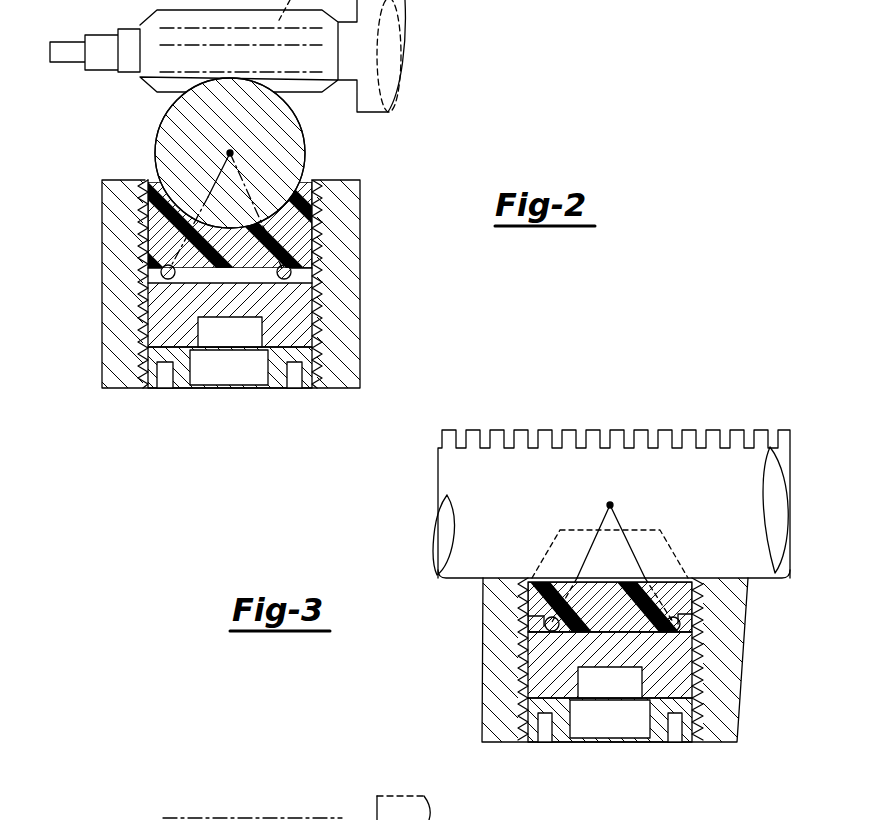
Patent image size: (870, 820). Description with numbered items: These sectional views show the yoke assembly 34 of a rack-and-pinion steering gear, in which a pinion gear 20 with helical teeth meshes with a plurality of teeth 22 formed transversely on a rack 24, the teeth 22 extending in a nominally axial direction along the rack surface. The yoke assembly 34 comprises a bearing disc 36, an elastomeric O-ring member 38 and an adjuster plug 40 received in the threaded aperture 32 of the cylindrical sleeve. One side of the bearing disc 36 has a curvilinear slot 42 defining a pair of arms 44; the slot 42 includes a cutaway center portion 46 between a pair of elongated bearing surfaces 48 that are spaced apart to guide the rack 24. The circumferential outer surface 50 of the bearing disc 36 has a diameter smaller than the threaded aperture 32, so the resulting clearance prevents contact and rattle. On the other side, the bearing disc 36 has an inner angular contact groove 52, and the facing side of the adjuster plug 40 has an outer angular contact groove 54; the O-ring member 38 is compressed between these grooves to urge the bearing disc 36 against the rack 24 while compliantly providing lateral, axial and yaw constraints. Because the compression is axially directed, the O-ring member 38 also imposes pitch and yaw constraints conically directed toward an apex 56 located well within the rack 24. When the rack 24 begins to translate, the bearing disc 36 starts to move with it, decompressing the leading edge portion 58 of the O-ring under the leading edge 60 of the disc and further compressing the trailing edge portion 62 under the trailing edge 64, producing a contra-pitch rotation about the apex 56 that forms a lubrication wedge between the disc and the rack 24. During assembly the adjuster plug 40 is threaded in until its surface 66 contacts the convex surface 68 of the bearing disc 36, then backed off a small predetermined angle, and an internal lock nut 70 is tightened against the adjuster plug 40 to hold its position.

In FIG. 3, the pinion gear 20 is at (275, 818).
In FIG. 2, the teeth 22 is at (227, 87).
In FIG. 3, the teeth 22 is at (518, 438).
In FIG. 2, the rack 24 is at (307, 157).
In FIG. 3, the rack 24 is at (440, 450).
In FIG. 2, the threaded aperture 32 is at (145, 207).
In FIG. 3, the threaded aperture 32 is at (528, 579).
In FIG. 2, the yoke assembly 34 is at (97, 255).
In FIG. 3, the yoke assembly 34 is at (760, 605).
In FIG. 2, the bearing disc 36 is at (306, 258).
In FIG. 3, the bearing disc 36 is at (673, 605).
In FIG. 2, the O-ring member 38 is at (312, 272).
In FIG. 3, the O-ring member 38 is at (680, 636).
In FIG. 2, the adjuster plug 40 is at (318, 333).
In FIG. 3, the adjuster plug 40 is at (700, 683).
In FIG. 2, the curvilinear slot 42 is at (195, 200).
In FIG. 2, the arms 44 is at (178, 198).
In FIG. 2, the cutaway center portion 46 is at (187, 250).
In FIG. 2, the bearing surfaces 48 is at (166, 132).
In FIG. 3, the bearing surfaces 48 is at (568, 542).
In FIG. 2, the circumferential outer surface 50 is at (305, 235).
In FIG. 2, the inner angular contact groove 52 is at (308, 268).
In FIG. 2, the outer angular contact groove 54 is at (290, 282).
In FIG. 3, the outer angular contact groove 54 is at (567, 636).
In FIG. 2, the apex 56 is at (302, 145).
In FIG. 3, the apex 56 is at (610, 505).
In FIG. 3, the leading edge portion 58 is at (548, 622).
In FIG. 3, the leading edge 60 is at (680, 560).
In FIG. 3, the trailing edge portion 62 is at (552, 634).
In FIG. 3, the trailing edge 64 is at (552, 575).
In FIG. 2, the surface 66 is at (182, 275).
In FIG. 3, the surface 66 is at (550, 642).
In FIG. 2, the convex surface 68 is at (293, 363).
In FIG. 3, the convex surface 68 is at (697, 688).
In FIG. 2, the internal lock nut 70 is at (147, 388).
In FIG. 3, the internal lock nut 70 is at (530, 742).